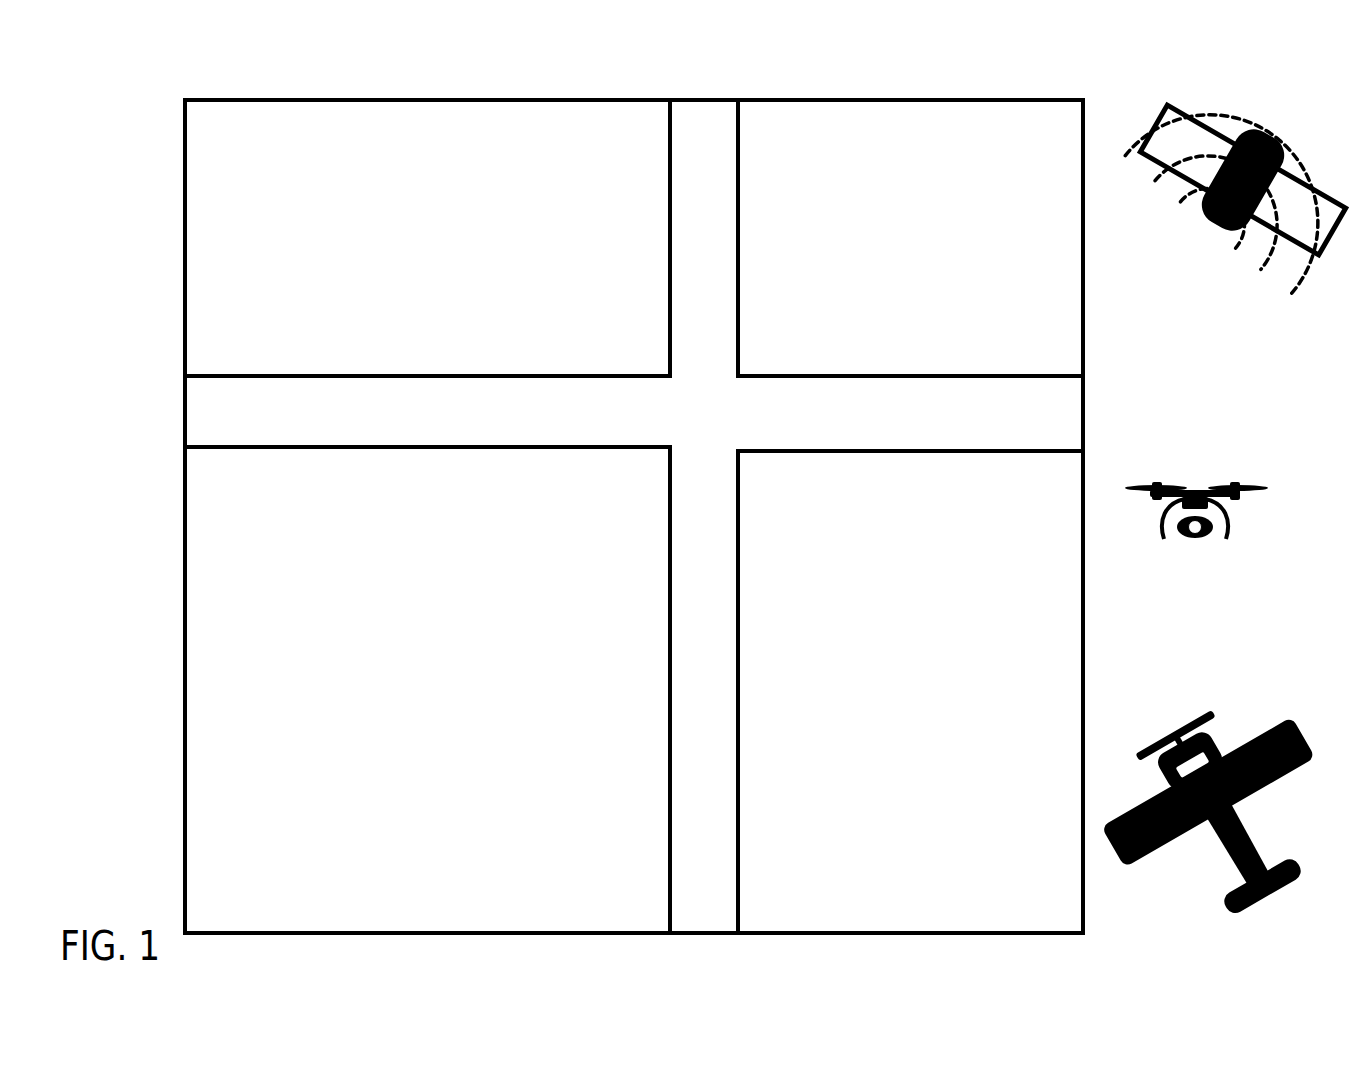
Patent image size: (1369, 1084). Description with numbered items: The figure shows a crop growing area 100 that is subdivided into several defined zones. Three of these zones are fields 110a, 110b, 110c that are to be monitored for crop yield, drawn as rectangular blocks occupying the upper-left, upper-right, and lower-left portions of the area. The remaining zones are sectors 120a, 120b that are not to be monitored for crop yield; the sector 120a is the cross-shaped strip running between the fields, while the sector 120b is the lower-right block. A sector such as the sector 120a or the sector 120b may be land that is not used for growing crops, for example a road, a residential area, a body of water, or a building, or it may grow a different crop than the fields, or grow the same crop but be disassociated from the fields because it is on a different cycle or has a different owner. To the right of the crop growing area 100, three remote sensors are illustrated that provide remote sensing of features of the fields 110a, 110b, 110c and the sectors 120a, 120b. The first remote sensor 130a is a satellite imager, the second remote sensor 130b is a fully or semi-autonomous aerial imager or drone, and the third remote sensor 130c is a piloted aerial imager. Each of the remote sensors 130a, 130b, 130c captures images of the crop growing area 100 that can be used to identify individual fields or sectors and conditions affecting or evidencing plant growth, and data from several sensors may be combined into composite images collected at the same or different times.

The crop growing area 100 is at (140, 125).
The field 110a is at (433, 248).
The field 110b is at (932, 248).
The field 110c is at (440, 698).
The sector 120a is at (727, 420).
The sector 120b is at (927, 698).
The first remote sensor 130a is at (1253, 130).
The second remote sensor 130b is at (1208, 487).
The third remote sensor 130c is at (1287, 722).